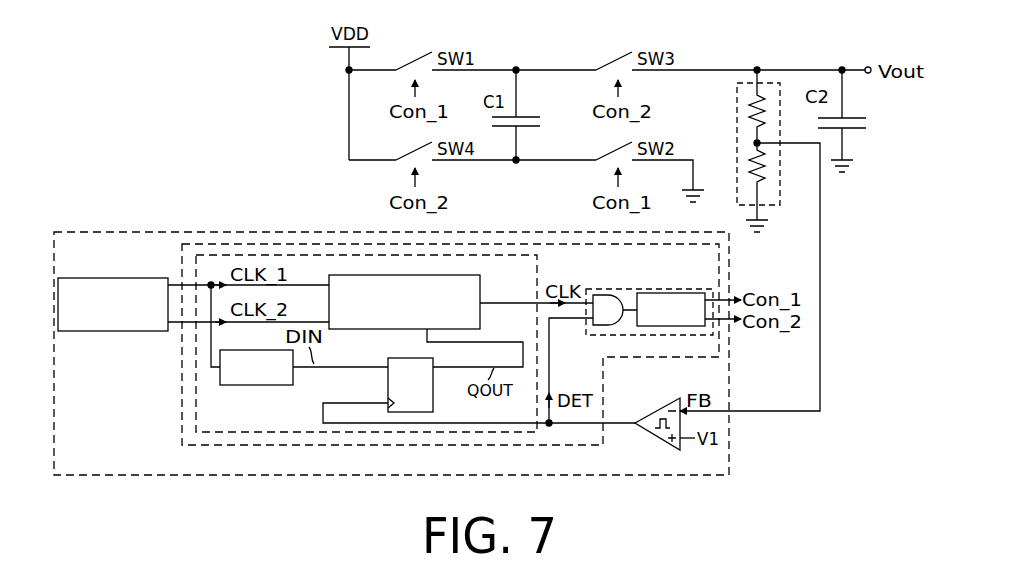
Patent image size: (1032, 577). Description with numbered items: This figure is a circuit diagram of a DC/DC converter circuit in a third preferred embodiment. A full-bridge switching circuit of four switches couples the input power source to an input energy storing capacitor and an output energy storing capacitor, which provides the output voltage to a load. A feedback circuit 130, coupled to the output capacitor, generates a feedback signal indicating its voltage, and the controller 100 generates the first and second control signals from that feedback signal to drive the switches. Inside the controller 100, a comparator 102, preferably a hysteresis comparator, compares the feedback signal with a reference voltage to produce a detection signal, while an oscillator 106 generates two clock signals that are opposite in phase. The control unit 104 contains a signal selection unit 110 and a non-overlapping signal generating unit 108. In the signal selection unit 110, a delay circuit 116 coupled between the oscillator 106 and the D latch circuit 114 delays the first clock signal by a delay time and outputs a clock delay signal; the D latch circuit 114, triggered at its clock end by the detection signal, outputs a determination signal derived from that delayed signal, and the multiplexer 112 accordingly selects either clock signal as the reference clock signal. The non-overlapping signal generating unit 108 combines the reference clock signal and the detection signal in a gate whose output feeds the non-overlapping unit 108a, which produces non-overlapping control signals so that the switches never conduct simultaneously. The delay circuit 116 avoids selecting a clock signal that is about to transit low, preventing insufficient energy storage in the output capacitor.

The controller 100 is at (157, 239).
The comparator 102 is at (652, 437).
The control unit 104 is at (185, 436).
The oscillator 106 is at (122, 326).
The non-overlapping signal generating unit 108 is at (649, 296).
The non-overlapping unit 108a is at (628, 290).
The signal selection unit 110 is at (532, 274).
The multiplexer 112 is at (473, 312).
The D latch circuit 114 is at (432, 403).
The delay circuit 116 is at (256, 367).
The feedback circuit 130 is at (737, 111).